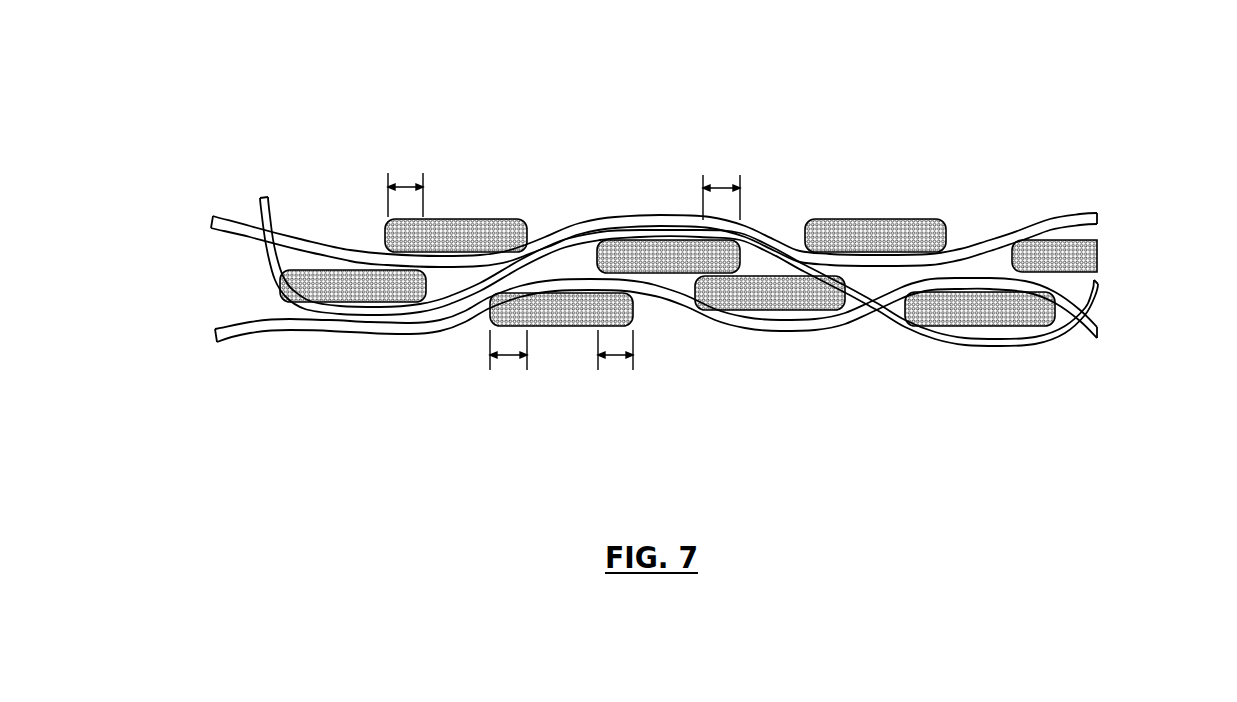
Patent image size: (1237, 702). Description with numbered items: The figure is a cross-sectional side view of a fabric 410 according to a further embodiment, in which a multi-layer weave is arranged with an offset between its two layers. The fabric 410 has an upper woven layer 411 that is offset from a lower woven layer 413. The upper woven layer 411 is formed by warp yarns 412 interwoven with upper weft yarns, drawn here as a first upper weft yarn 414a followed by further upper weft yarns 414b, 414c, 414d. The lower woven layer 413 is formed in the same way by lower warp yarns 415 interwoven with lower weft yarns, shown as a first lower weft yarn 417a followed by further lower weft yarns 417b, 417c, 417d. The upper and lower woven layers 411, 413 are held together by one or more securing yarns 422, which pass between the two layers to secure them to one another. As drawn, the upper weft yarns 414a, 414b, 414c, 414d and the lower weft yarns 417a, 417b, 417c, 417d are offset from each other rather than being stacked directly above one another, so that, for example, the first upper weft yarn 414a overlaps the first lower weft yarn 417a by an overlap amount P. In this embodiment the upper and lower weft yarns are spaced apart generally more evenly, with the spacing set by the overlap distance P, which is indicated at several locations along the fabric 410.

The fabric 410 is at (373, 100).
The upper woven layer 411 is at (962, 172).
The lower woven layer 413 is at (916, 405).
The warp yarns 412 is at (233, 218).
The lower warp yarns 415 is at (233, 332).
The securing yarns 422 is at (270, 215).
The first upper weft yarn 414a is at (450, 218).
The upper weft yarn 414b is at (623, 252).
The upper weft yarn 414c is at (856, 220).
The upper weft yarn 414d is at (1045, 252).
The first lower weft yarn 417a is at (350, 292).
The lower weft yarn 417b is at (553, 312).
The lower weft yarn 417c is at (738, 297).
The lower weft yarn 417d is at (965, 320).
The overlap amount P is at (404, 183).